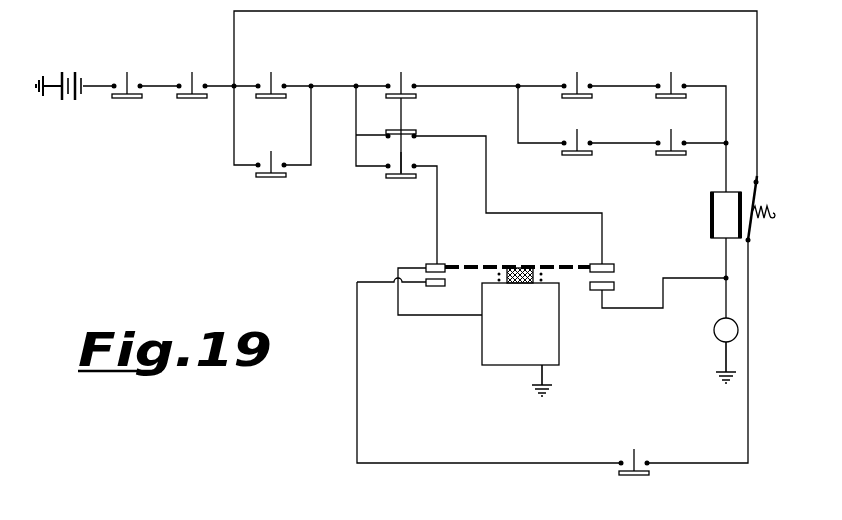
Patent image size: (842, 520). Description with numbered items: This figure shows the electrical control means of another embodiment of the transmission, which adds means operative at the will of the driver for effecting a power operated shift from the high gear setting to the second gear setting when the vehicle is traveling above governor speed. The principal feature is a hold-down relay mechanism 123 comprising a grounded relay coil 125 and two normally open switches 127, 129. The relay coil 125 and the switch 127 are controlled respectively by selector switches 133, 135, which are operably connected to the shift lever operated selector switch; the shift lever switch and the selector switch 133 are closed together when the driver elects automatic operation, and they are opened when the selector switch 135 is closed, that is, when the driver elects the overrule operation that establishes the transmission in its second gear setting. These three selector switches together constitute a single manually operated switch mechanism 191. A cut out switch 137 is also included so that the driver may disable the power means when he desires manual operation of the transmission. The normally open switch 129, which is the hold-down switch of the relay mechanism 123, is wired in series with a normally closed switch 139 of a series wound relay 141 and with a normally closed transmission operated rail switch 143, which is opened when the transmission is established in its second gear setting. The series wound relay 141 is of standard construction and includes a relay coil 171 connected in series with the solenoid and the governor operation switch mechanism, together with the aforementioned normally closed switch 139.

The cut out switch 137 is at (190, 99).
The manually operated switch mechanism 191 is at (384, 111).
The selector switch 135 is at (409, 141).
The selector switch 133 is at (388, 170).
The series wound relay 141 is at (719, 184).
The relay coil 171 is at (710, 208).
The normally closed switch 139 is at (760, 193).
The normally open switch 127 is at (614, 276).
The normally open switch 129 is at (447, 275).
The hold-down relay mechanism 123 is at (560, 318).
The relay coil 125 is at (490, 351).
The rail switch 143 is at (616, 470).